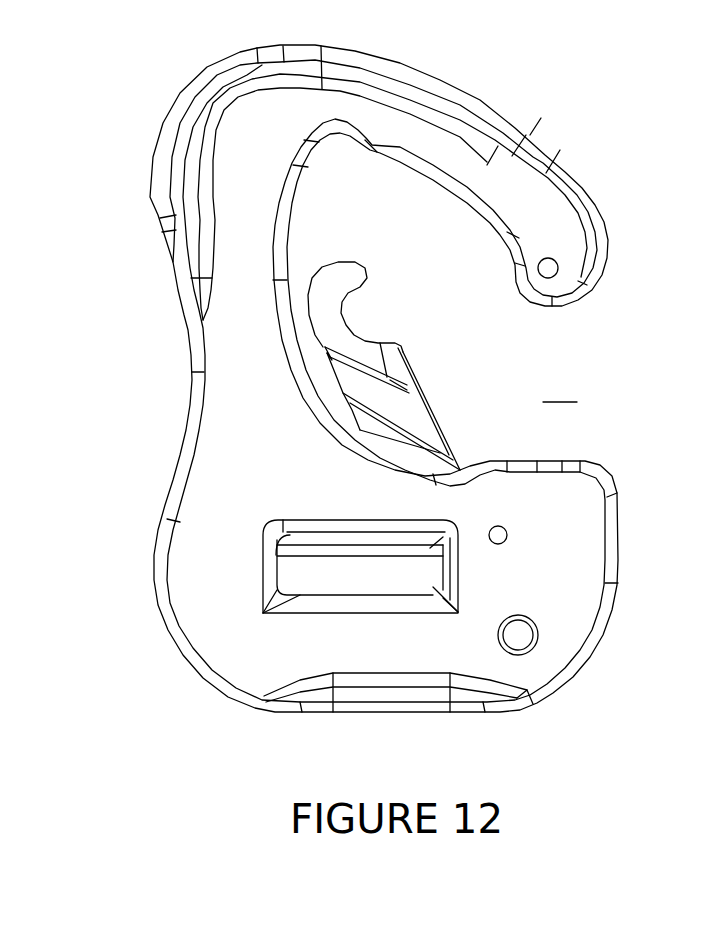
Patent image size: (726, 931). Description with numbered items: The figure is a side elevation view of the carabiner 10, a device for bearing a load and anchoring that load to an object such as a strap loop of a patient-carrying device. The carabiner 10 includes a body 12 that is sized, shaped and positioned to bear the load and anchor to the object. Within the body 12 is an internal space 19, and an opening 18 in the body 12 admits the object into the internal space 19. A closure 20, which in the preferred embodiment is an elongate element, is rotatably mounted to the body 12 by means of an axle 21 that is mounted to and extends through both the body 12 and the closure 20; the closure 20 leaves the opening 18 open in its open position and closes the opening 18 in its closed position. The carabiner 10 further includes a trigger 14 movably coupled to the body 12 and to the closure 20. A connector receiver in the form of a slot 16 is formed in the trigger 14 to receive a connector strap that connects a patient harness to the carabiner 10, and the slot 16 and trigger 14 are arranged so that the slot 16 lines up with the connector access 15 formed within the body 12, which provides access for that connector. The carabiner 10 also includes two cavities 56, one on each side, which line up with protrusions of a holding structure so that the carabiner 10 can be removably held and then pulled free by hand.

The carabiner 10 is at (170, 366).
The body 12 is at (618, 583).
The trigger 14 is at (303, 583).
The connector access 15 is at (273, 577).
The slot 16 is at (283, 614).
The opening 18 is at (560, 390).
The internal space 19 is at (381, 214).
The closure 20 is at (420, 407).
The axle 21 is at (508, 529).
The cavities 56 is at (537, 650).